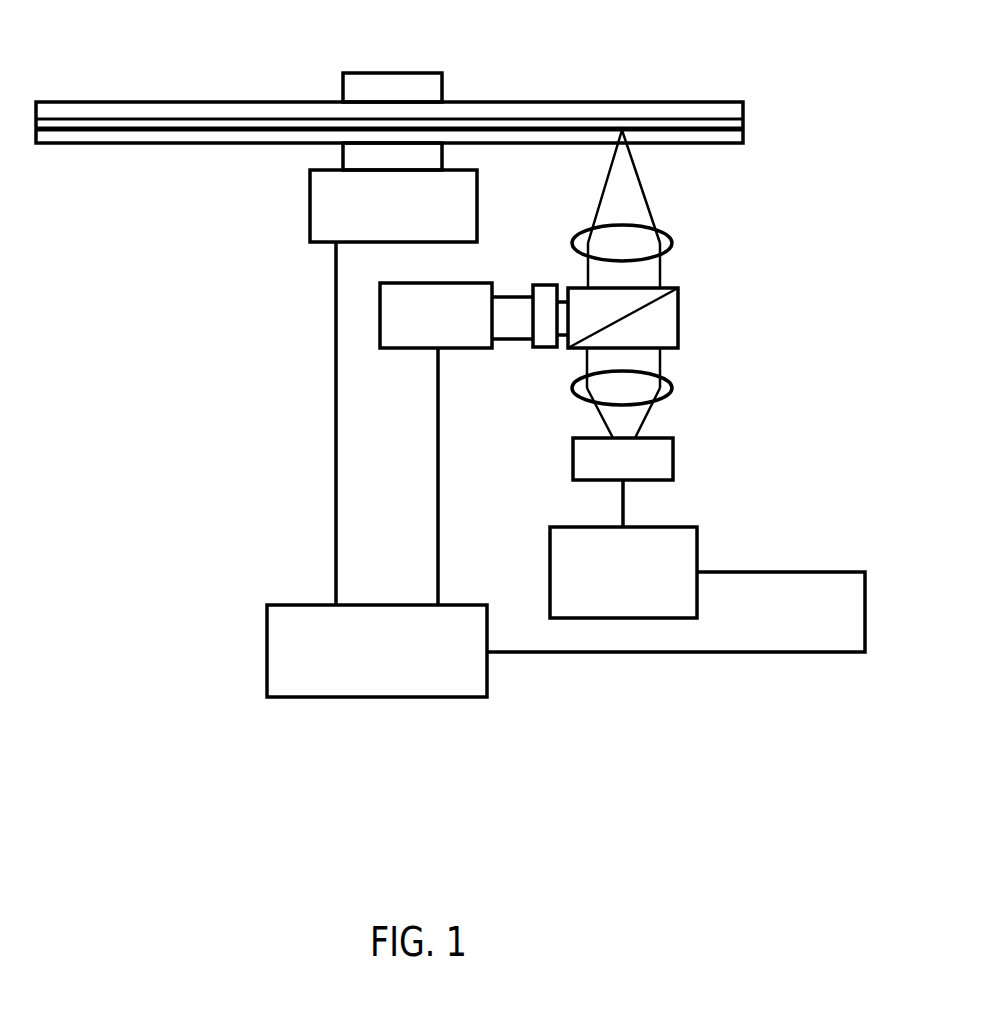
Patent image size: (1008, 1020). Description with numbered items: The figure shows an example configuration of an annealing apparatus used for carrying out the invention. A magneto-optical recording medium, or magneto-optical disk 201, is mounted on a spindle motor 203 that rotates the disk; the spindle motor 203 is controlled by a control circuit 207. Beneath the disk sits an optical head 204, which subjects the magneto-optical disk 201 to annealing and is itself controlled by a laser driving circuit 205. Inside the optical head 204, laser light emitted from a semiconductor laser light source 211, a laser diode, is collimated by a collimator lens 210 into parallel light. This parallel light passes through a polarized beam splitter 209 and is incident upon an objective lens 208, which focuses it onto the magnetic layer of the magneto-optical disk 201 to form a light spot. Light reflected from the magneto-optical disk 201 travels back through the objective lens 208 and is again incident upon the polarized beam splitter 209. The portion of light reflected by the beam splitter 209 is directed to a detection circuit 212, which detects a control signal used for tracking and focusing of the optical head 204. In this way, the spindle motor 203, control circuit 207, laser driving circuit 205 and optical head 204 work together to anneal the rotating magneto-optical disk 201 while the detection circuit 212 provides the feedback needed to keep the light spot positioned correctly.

The magneto-optical recording medium 201 is at (146, 102).
The spindle motor 203 is at (310, 200).
The optical head 204 is at (765, 204).
The laser driving circuit 205 is at (697, 550).
The control circuit 207 is at (372, 697).
The objective lens 208 is at (672, 243).
The polarized beam splitter 209 is at (678, 313).
The collimator lens 210 is at (672, 388).
The semiconductor laser light source 211 is at (673, 455).
The detection circuit 212 is at (380, 312).